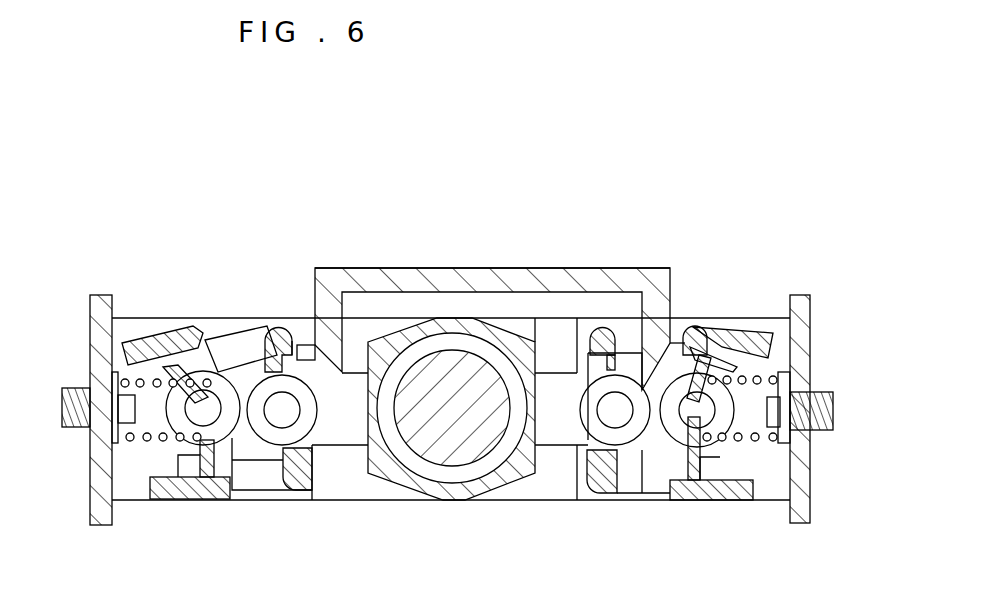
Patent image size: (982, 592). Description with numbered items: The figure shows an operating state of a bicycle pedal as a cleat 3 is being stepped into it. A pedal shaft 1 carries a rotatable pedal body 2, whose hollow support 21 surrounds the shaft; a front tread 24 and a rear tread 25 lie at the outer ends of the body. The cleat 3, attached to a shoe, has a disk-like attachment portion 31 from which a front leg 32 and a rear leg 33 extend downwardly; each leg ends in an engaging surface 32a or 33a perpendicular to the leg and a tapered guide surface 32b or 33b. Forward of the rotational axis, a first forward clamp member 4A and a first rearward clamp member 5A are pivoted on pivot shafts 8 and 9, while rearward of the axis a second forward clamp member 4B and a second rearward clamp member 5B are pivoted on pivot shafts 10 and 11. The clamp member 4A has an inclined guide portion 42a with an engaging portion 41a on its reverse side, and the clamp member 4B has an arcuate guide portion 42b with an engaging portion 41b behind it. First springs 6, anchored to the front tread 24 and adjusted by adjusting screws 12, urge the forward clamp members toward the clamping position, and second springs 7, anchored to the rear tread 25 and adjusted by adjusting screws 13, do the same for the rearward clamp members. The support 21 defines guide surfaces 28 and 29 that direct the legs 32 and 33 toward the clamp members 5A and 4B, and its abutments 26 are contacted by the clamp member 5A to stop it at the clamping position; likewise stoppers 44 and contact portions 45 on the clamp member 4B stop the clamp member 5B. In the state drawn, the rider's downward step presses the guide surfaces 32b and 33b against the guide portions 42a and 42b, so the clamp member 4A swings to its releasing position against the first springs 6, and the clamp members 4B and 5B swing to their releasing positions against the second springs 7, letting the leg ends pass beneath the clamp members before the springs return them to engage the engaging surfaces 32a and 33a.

The pedal shaft 1 is at (457, 460).
The pedal body 2 is at (452, 310).
The cleat 3 is at (473, 262).
The first forward clamp member 4A is at (735, 335).
The second forward clamp member 4B is at (252, 322).
The first rearward clamp member 5A is at (618, 327).
The second rearward clamp member 5B is at (185, 320).
The first springs 6 is at (758, 440).
The second springs 7 is at (147, 437).
The pivot shafts 8 is at (680, 493).
The pivot shafts 9 is at (607, 415).
The pivot shafts 10 is at (278, 417).
The pivot shafts 11 is at (218, 413).
The adjusting screws 12 is at (833, 407).
The adjusting screws 13 is at (62, 397).
The hollow support 21 is at (430, 332).
The front tread 24 is at (807, 480).
The rear tread 25 is at (90, 500).
The abutments 26 is at (582, 380).
The guide surface 28 is at (519, 317).
The guide surface 29 is at (394, 335).
The attachment portion 31 is at (494, 292).
The front leg 32 is at (625, 325).
The engaging surface 32a is at (686, 340).
The guide surface 32b is at (688, 417).
The rear leg 33 is at (352, 316).
The engaging surface 33a is at (305, 345).
The guide surface 33b is at (325, 445).
The engaging portion 41a is at (712, 335).
The engaging portion 41b is at (288, 322).
The guide portion 42a is at (711, 327).
The guide portion 42b is at (273, 327).
The stoppers 44 is at (227, 345).
The contact portions 45 is at (555, 320).